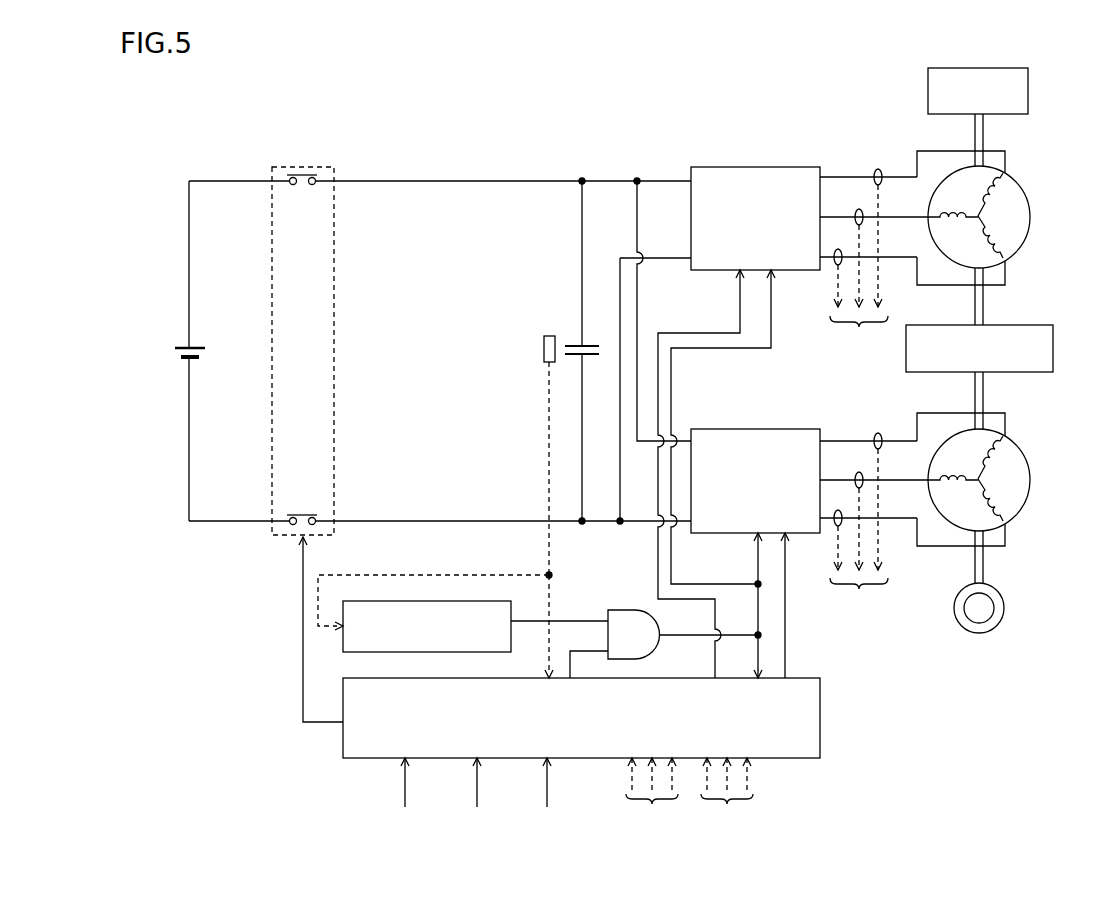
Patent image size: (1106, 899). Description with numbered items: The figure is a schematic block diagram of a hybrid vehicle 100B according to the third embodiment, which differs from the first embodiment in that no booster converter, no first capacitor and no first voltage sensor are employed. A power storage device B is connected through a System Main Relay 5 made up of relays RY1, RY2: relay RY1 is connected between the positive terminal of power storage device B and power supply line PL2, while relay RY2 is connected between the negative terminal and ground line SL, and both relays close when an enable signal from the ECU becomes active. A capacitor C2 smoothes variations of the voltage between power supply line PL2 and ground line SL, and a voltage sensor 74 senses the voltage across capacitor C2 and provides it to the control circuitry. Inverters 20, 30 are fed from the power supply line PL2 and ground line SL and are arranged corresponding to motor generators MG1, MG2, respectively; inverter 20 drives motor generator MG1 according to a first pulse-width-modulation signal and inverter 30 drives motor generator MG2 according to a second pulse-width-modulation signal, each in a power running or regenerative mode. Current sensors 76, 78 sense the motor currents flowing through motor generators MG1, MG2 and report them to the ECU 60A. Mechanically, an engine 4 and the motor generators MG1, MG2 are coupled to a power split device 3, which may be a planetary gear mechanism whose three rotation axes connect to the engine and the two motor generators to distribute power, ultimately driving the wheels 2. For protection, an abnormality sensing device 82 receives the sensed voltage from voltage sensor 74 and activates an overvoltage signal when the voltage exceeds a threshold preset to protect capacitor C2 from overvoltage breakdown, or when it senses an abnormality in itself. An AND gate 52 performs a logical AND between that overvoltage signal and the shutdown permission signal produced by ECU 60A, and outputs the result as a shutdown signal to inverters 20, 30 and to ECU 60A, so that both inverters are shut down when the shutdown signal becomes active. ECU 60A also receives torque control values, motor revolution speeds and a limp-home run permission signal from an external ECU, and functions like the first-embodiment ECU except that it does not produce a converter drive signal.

The hybrid vehicle 100B is at (247, 122).
The power storage device B is at (181, 347).
The System Main Relay (SMR) 5 is at (288, 172).
The relay RY1 is at (308, 172).
The relay RY2 is at (307, 513).
The power supply line PL2 is at (606, 178).
The ground line SL is at (598, 525).
The capacitor C2 is at (588, 346).
The voltage sensor 74 is at (548, 336).
The inverter 20 is at (783, 167).
The inverter 30 is at (783, 429).
The current sensor 76 is at (838, 249).
The current sensor 78 is at (838, 510).
The motor generator MG1 is at (1029, 204).
The motor generator MG2 is at (1029, 467).
The engine 4 is at (1008, 68).
The power split device 3 is at (1033, 325).
The wheels 2 is at (1000, 594).
The abnormality sensing device 82 is at (478, 601).
The AND gate 52 is at (630, 610).
The ECU 60A is at (820, 718).